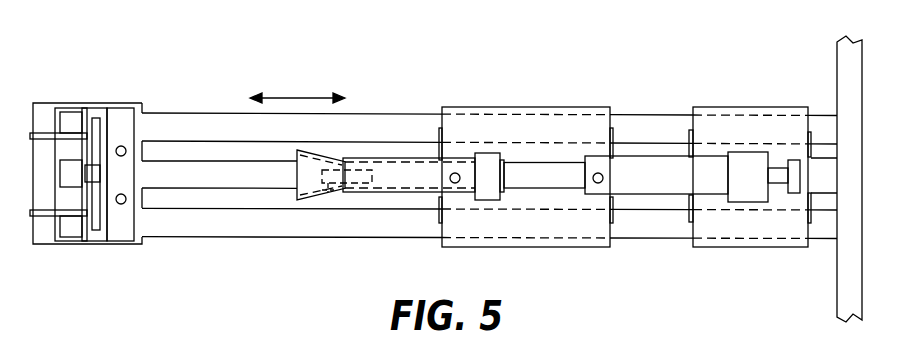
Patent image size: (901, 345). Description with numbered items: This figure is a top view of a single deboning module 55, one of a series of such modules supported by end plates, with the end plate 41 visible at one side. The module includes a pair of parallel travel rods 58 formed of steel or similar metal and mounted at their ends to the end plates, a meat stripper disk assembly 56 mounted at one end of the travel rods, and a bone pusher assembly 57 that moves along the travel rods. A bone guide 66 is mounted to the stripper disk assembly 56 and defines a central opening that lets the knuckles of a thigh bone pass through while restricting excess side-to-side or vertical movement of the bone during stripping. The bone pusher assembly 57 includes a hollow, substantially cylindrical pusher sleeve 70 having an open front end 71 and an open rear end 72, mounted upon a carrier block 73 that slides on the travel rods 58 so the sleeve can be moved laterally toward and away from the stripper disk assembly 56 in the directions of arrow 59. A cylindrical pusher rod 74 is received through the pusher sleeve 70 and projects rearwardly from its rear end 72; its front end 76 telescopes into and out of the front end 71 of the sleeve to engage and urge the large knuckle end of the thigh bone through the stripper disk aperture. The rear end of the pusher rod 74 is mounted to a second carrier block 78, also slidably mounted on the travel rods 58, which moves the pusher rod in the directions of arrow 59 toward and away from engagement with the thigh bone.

The end plate 41 is at (848, 82).
The deboning module 55 is at (366, 77).
The meat stripper disk assembly 56 is at (96, 103).
The bone pusher assembly 57 is at (526, 137).
The travel rods 58 is at (217, 113).
The arrow 59 is at (305, 98).
The bone guide 66 is at (33, 133).
The pusher sleeve 70 is at (465, 167).
The front end 71 is at (297, 180).
The rear end 72 is at (507, 177).
The carrier block 73 is at (507, 110).
The pusher rod 74 is at (562, 178).
The front end 76 is at (330, 192).
The carrier block 78 is at (713, 127).